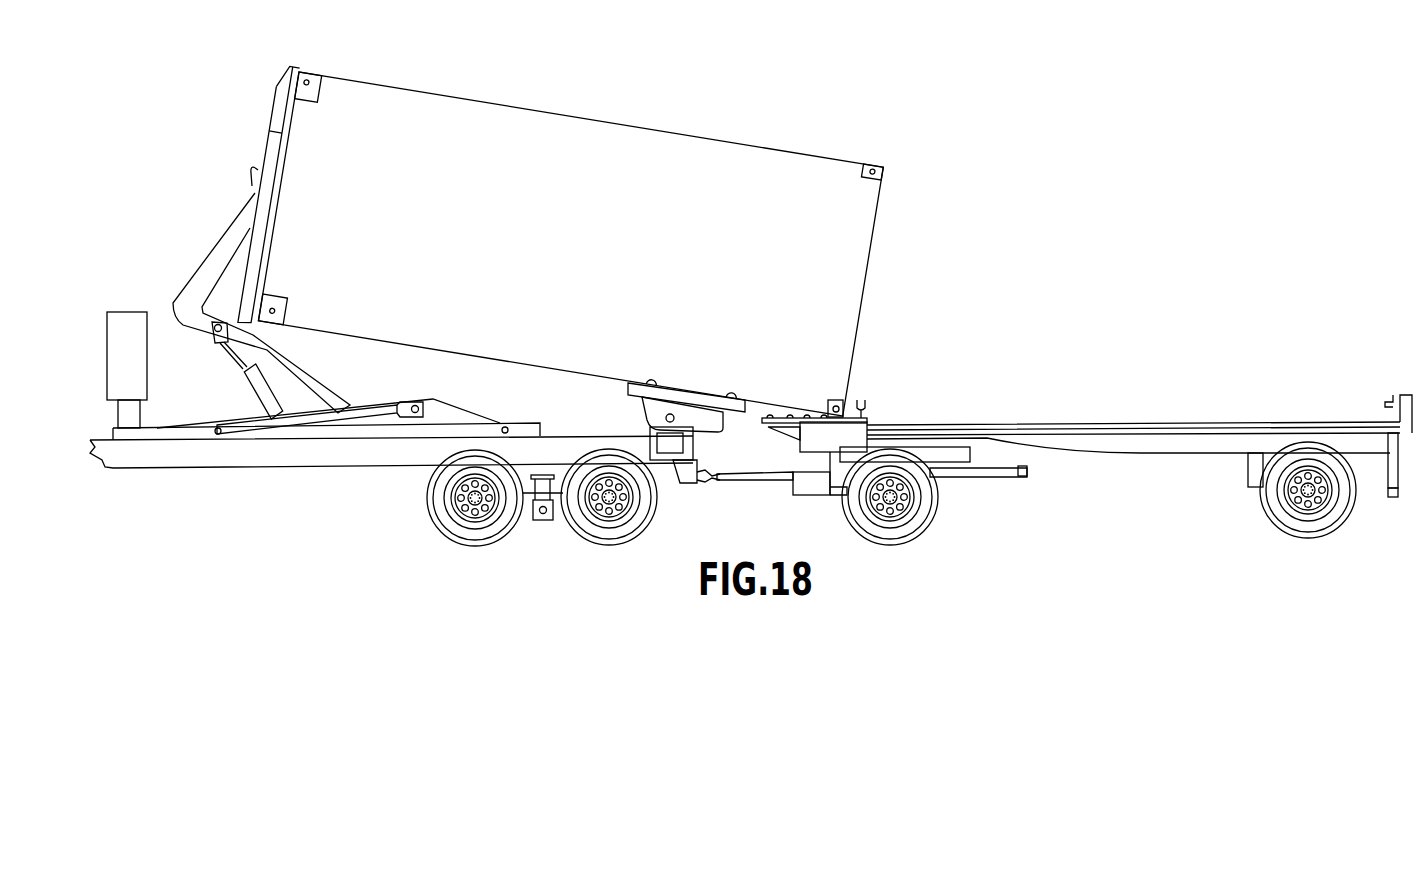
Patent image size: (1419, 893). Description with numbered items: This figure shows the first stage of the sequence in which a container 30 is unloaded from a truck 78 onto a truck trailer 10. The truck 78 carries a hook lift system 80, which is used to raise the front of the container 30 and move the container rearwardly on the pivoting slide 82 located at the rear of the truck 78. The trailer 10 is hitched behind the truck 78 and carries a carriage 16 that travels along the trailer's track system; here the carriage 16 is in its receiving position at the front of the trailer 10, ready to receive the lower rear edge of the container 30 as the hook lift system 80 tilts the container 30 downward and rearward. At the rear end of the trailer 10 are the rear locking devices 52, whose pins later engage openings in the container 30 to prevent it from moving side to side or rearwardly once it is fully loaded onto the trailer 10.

The container 30 is at (625, 115).
The hook lift system 80 is at (225, 205).
The pivoting slide 82 is at (703, 397).
The carriage 16 is at (868, 417).
The truck trailer 10 is at (1127, 418).
The rear locking devices 52 is at (1402, 393).
The truck 78 is at (267, 468).